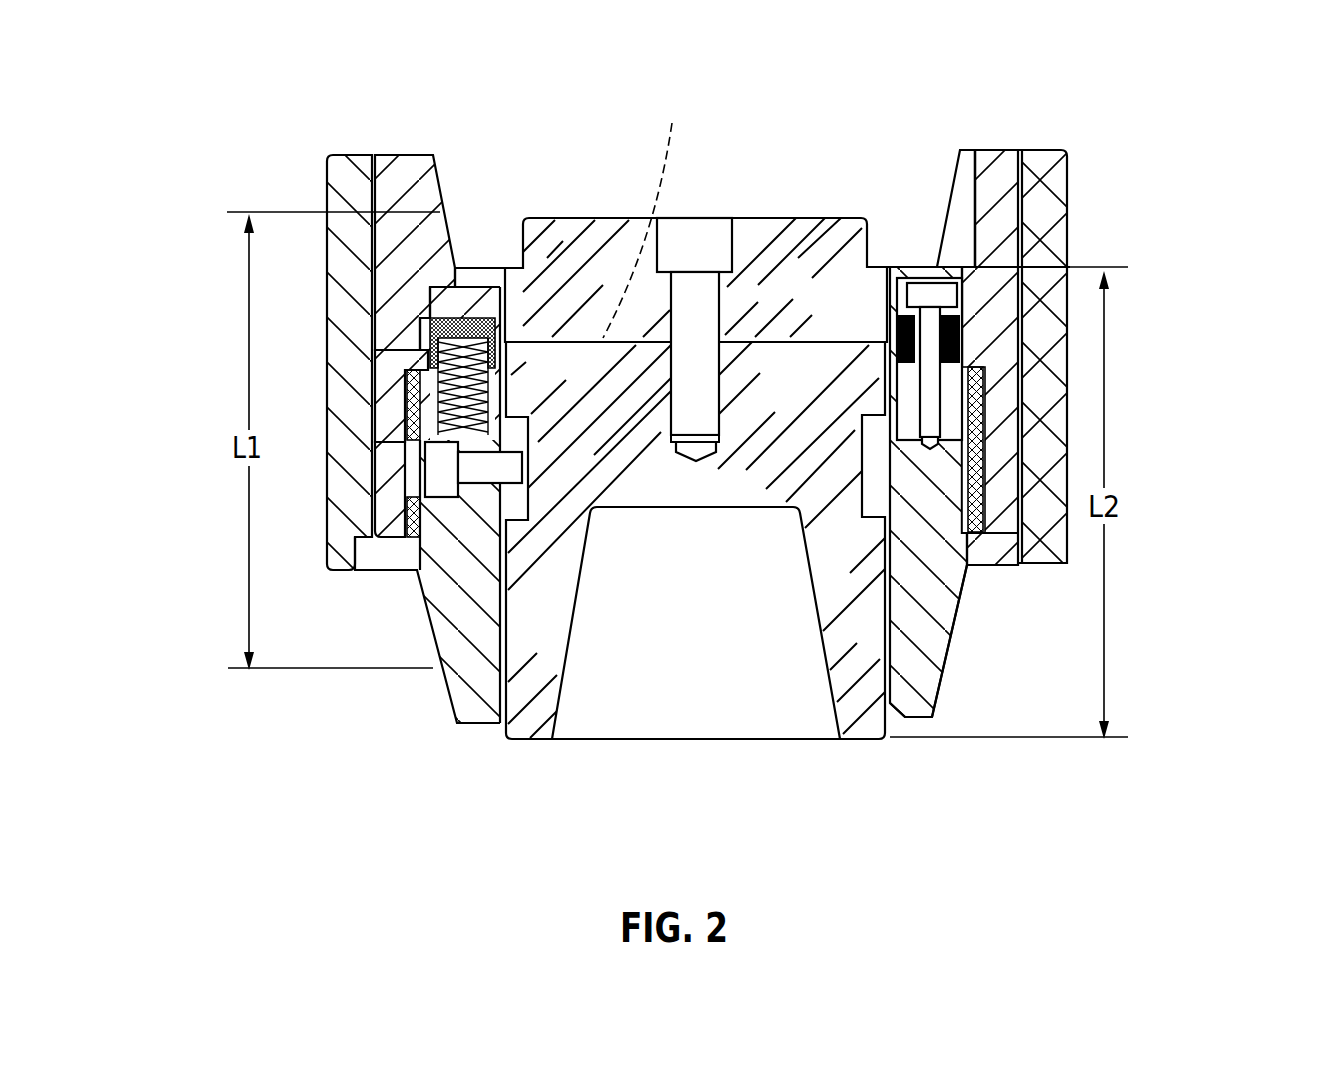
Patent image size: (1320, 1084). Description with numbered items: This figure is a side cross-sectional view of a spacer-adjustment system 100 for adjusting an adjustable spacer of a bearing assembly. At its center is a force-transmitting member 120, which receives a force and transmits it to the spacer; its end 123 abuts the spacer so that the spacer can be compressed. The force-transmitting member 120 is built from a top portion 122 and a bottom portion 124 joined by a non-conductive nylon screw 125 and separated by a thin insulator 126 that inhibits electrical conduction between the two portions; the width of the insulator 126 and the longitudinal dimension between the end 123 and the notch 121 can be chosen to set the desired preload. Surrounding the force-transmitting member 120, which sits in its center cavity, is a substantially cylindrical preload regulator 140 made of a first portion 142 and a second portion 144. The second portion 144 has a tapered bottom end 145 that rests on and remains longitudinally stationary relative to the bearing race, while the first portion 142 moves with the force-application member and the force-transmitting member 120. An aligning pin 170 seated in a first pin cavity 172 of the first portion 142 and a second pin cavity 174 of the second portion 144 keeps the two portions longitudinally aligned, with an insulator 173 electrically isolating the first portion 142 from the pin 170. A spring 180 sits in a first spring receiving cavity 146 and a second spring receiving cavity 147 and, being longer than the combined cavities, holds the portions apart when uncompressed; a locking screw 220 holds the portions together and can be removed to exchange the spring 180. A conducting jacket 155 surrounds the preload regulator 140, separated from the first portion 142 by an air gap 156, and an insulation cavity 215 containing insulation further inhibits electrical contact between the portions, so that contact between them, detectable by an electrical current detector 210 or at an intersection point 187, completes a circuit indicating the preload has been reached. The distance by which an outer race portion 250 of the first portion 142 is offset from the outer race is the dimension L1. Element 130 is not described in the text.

The spacer-adjustment system 100 is at (331, 806).
The force-transmitting member 120 is at (632, 492).
The notch 121 is at (814, 191).
The top portion 122 is at (661, 305).
The end 123 is at (520, 742).
The bottom portion 124 is at (807, 372).
The screw 125 is at (708, 248).
The insulator 126 is at (652, 214).
The cover plate 130 is at (550, 220).
The preload regulator 140 is at (918, 556).
The first portion 142 is at (1040, 252).
The second portion 144 is at (915, 611).
The bottom end 145 is at (903, 700).
The first spring receiving cavity 146 is at (428, 350).
The second spring receiving cavity 147 is at (400, 435).
The conducting jacket 155 is at (1053, 240).
The air gap 156 is at (990, 430).
The aligning pin 170 is at (1007, 257).
The first pin cavity 172 is at (1055, 153).
The insulator 173 is at (965, 322).
The second pin cavity 174 is at (955, 393).
The spring 180 is at (377, 385).
The intersection point 187 is at (1000, 520).
The electrical current detector 210 is at (440, 405).
The insulation cavity 215 is at (939, 454).
The locking screw 220 is at (445, 480).
The outer race portion 250 is at (422, 158).